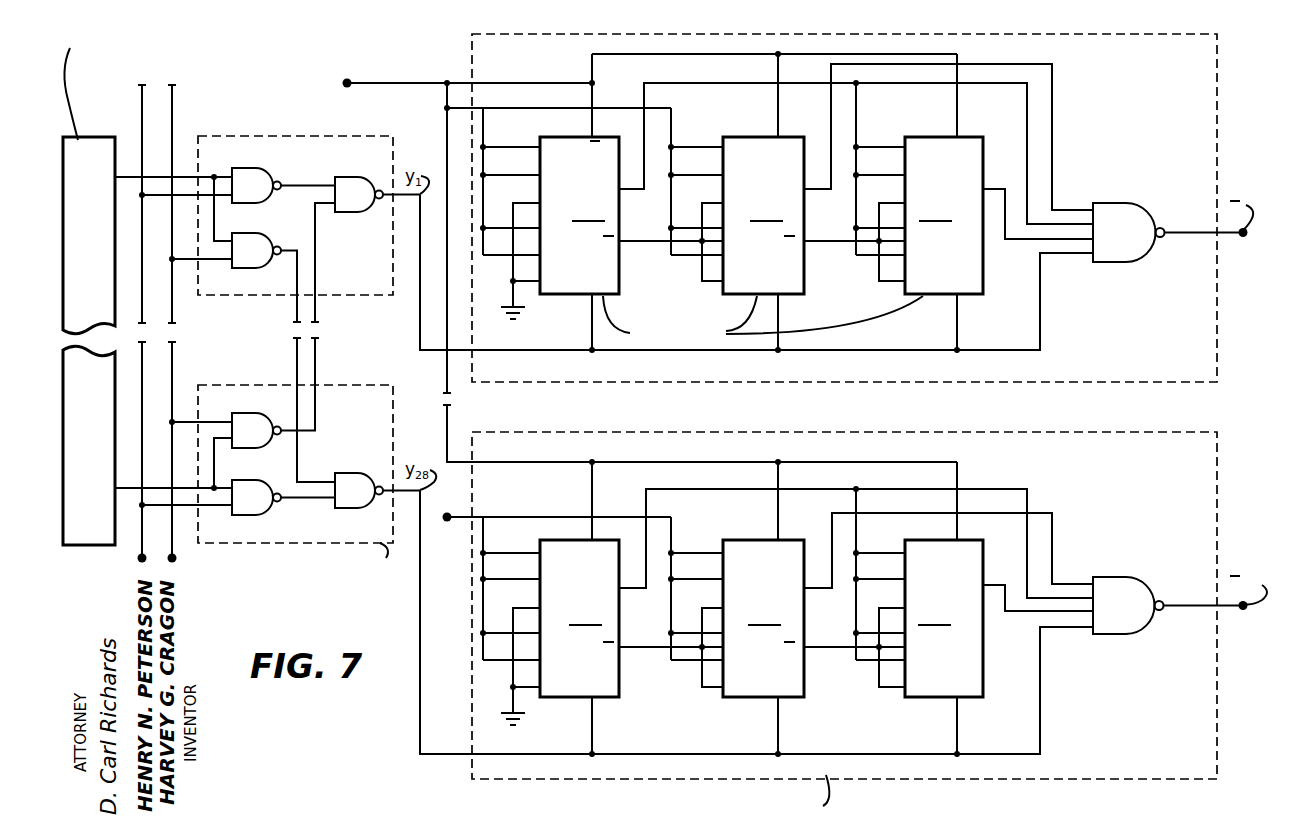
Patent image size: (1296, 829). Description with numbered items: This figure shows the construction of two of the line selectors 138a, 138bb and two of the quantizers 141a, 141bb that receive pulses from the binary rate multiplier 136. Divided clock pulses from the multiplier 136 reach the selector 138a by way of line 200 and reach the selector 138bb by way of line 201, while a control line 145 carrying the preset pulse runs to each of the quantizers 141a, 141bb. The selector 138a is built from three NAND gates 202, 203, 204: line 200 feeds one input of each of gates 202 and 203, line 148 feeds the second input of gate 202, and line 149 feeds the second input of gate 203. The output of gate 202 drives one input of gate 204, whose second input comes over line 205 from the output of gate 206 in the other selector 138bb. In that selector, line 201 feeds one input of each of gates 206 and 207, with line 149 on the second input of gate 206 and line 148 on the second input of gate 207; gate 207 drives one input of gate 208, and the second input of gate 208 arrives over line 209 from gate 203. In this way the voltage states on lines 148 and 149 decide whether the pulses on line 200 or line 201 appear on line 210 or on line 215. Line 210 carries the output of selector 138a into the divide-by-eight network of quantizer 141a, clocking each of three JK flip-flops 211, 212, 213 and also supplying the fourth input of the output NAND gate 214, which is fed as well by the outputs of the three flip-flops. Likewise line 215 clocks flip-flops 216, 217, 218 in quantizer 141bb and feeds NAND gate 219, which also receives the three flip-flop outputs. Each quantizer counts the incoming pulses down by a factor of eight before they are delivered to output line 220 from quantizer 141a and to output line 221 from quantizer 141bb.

The multiplier 136 is at (107, 305).
The line selector 138a is at (300, 135).
The line selector 138bb is at (273, 385).
The quantizer 141a is at (519, 383).
The quantizer 141bb is at (516, 432).
The control line 145 is at (392, 83).
The line 148 is at (140, 118).
The line 149 is at (175, 118).
The line 200 is at (124, 177).
The line 201 is at (122, 488).
The NAND gate 202 is at (255, 200).
The NAND gate 203 is at (242, 265).
The NAND gate 204 is at (343, 208).
The line 205 is at (318, 270).
The NAND gate 206 is at (243, 445).
The NAND gate 207 is at (246, 512).
The NAND gate 208 is at (346, 505).
The line 209 is at (299, 447).
The line 210 is at (517, 349).
The flip-flop 211 is at (768, 202).
The flip-flop 212 is at (856, 200).
The flip-flop 213 is at (842, 202).
The output NAND gate 214 is at (1135, 243).
The line 215 is at (420, 715).
The flip-flop 216 is at (770, 608).
The flip-flop 217 is at (856, 608).
The flip-flop 218 is at (948, 608).
The NAND gate 219 is at (1137, 615).
The output line 220 is at (1243, 236).
The output line 221 is at (1243, 609).